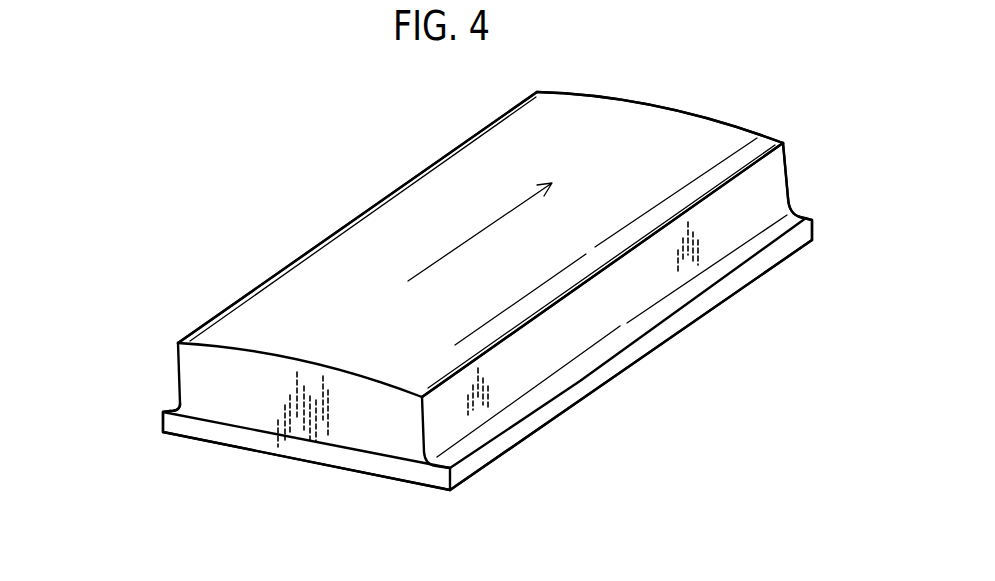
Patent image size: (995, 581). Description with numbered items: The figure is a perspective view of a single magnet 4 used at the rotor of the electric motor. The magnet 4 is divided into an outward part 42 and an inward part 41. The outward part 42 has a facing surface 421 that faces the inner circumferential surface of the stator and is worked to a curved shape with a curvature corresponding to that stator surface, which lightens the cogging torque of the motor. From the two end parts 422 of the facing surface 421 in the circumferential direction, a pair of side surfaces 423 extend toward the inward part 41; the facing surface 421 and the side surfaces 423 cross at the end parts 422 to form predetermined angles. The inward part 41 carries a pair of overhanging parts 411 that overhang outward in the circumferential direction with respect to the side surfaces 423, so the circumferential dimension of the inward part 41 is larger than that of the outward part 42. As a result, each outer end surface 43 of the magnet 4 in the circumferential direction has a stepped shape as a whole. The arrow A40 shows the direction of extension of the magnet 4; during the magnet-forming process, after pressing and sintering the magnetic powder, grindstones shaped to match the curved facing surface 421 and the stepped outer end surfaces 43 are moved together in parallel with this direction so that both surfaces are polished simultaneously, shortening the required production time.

The magnet 4 is at (192, 108).
The inward part 41 is at (260, 415).
The overhanging parts 411 is at (167, 420).
The outward part 42 is at (353, 403).
The facing surface 421 is at (703, 130).
The end parts 422 is at (480, 129).
The side surfaces 423 is at (177, 363).
The outer end surface 43 is at (808, 192).
The arrow A40 is at (463, 247).